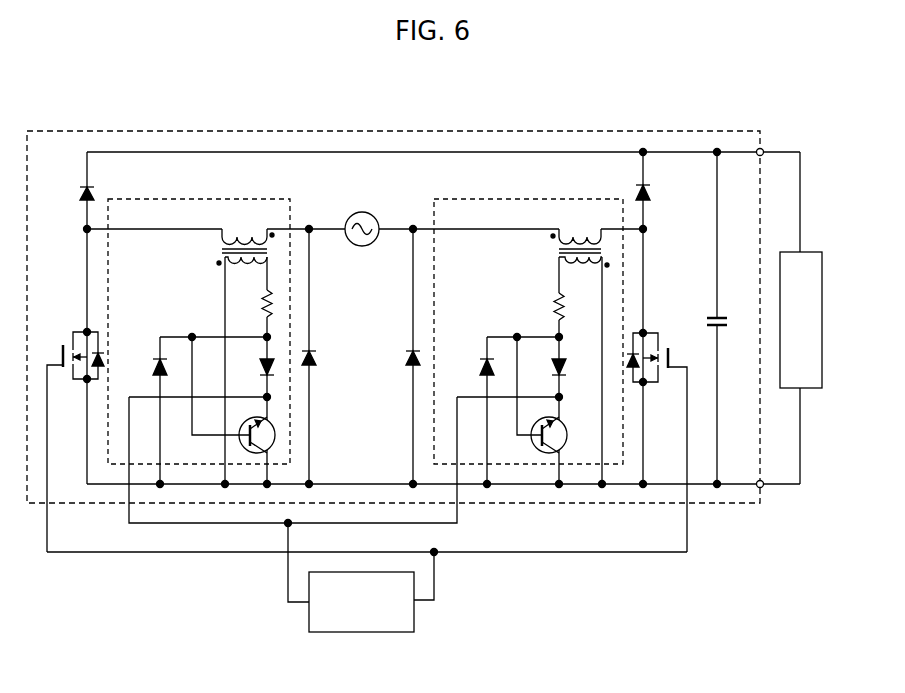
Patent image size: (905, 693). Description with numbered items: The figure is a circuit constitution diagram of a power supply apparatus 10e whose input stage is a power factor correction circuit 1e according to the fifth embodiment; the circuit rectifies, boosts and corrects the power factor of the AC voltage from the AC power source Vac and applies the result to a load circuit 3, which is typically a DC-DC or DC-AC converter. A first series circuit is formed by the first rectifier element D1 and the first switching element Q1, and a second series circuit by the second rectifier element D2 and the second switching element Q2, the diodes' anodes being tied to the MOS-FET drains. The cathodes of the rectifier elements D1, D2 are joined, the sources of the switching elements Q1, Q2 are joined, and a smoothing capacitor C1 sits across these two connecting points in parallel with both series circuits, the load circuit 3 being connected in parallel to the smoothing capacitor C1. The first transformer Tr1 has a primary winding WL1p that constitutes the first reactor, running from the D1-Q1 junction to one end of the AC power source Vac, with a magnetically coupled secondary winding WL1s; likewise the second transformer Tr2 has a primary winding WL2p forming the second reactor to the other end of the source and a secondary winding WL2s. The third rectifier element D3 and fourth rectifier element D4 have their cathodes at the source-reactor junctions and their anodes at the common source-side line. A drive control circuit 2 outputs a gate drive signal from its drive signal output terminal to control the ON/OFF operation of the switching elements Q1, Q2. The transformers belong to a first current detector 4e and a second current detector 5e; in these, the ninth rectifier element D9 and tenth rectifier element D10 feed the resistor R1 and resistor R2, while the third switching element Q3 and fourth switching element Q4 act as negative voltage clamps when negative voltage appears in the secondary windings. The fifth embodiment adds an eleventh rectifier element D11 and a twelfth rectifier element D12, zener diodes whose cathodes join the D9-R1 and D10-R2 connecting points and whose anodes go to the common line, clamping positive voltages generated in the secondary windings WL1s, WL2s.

The power supply apparatus 10e is at (63, 102).
The power factor correction circuit 1e is at (237, 131).
The drive control circuit 2 is at (362, 632).
The load circuit 3 is at (823, 258).
The first current detector 4e is at (532, 388).
The second current detector 5e is at (202, 386).
The first switching element Q1 is at (657, 442).
The second switching element Q2 is at (75, 442).
The third switching element Q3 is at (553, 395).
The fourth switching element Q4 is at (233, 395).
The first rectifier element D1 is at (654, 192).
The second rectifier element D2 is at (98, 193).
The third rectifier element D3 is at (402, 358).
The fourth rectifier element D4 is at (319, 358).
The ninth rectifier element D9 is at (547, 367).
The tenth rectifier element D10 is at (251, 367).
The eleventh rectifier element D11 is at (471, 410).
The twelfth rectifier element D12 is at (144, 410).
The resistor R1 is at (547, 306).
The resistor R2 is at (255, 303).
The smoothing capacitor C1 is at (728, 318).
The first transformer Tr1 is at (570, 237).
The second transformer Tr2 is at (236, 236).
The primary winding WL1p is at (593, 232).
The secondary winding WL1s is at (569, 272).
The primary winding WL2p is at (261, 232).
The secondary winding WL2s is at (231, 272).
The AC power source Vac is at (362, 238).